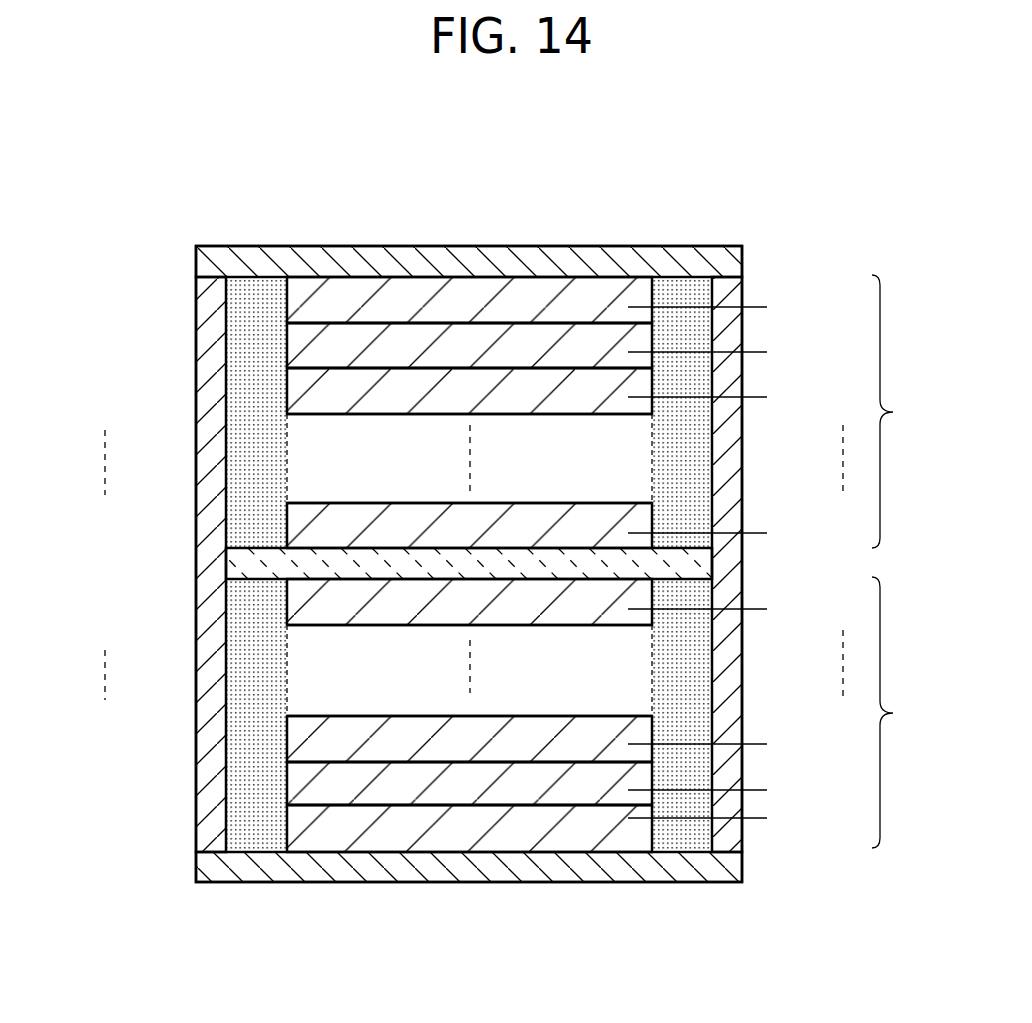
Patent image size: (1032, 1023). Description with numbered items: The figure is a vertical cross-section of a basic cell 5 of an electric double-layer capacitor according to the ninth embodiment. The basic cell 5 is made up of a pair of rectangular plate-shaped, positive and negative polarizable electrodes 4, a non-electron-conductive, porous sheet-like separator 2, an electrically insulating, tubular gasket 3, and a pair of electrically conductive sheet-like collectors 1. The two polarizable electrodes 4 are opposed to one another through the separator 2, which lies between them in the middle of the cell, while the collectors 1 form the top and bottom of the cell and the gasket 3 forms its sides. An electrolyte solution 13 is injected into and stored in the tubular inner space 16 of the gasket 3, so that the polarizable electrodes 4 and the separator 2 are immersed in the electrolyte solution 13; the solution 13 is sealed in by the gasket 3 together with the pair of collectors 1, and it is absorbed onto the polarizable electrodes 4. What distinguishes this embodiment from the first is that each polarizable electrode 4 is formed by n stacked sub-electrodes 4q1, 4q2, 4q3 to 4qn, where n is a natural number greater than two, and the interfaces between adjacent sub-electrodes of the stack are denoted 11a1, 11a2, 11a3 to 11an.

The collector 1 is at (558, 262).
The separator 2 is at (257, 566).
The gasket 3 is at (728, 553).
The polarizable electrode 4 is at (512, 561).
The sub-electrode 4q1 is at (767, 307).
The sub-electrode 4q2 is at (767, 352).
The sub-electrode 4q3 is at (767, 397).
The sub-electrode 4qn is at (767, 533).
The basic cell 5 is at (195, 217).
The interface 11a1 is at (277, 328).
The interface 11a2 is at (277, 373).
The interface 11a3 is at (277, 419).
The interface 11an is at (277, 512).
The electrolyte solution 13 is at (322, 568).
The tubular inner space 16 is at (235, 300).